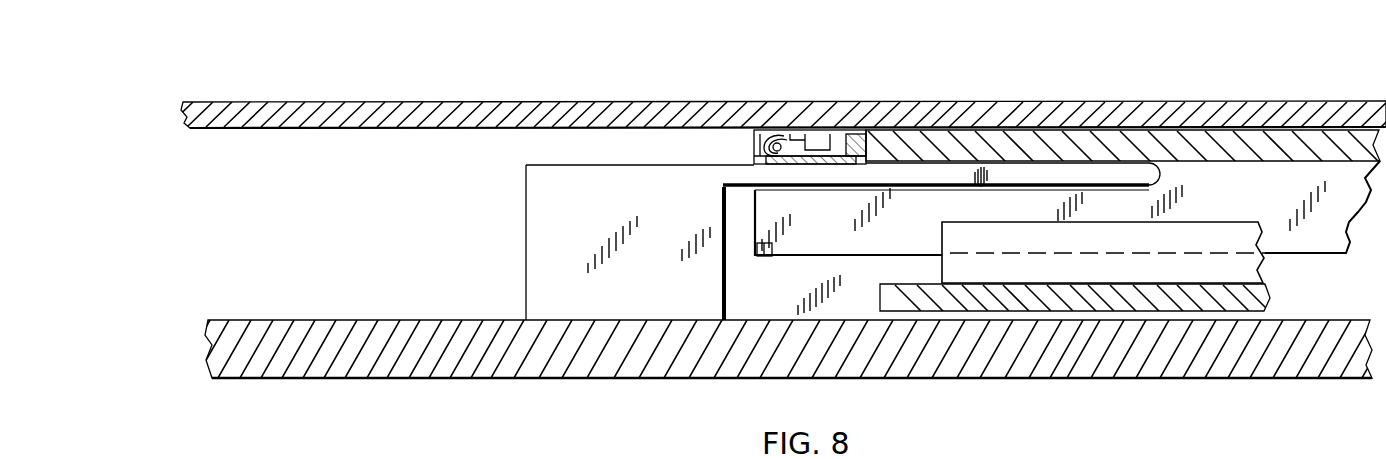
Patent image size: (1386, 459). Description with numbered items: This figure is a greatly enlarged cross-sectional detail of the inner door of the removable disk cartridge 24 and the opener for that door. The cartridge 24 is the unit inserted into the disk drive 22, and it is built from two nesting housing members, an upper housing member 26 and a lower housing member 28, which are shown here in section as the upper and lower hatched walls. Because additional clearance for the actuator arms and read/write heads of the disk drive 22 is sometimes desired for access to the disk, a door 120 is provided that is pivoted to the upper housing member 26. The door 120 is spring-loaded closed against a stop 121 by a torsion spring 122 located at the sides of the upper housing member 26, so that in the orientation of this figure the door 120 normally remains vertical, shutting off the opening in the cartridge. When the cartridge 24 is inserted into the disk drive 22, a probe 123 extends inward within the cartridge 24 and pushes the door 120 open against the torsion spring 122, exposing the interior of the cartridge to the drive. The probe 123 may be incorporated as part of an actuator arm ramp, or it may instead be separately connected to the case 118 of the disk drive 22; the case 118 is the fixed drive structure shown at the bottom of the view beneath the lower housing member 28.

The disk drive 22 is at (866, 358).
The cartridge 24 is at (1010, 127).
The upper housing member 26 is at (1160, 140).
The lower housing member 28 is at (1118, 303).
The case 118 is at (582, 370).
The door 120 is at (832, 155).
The stop 121 is at (768, 258).
The torsion spring 122 is at (797, 133).
The probe 123 is at (1028, 182).